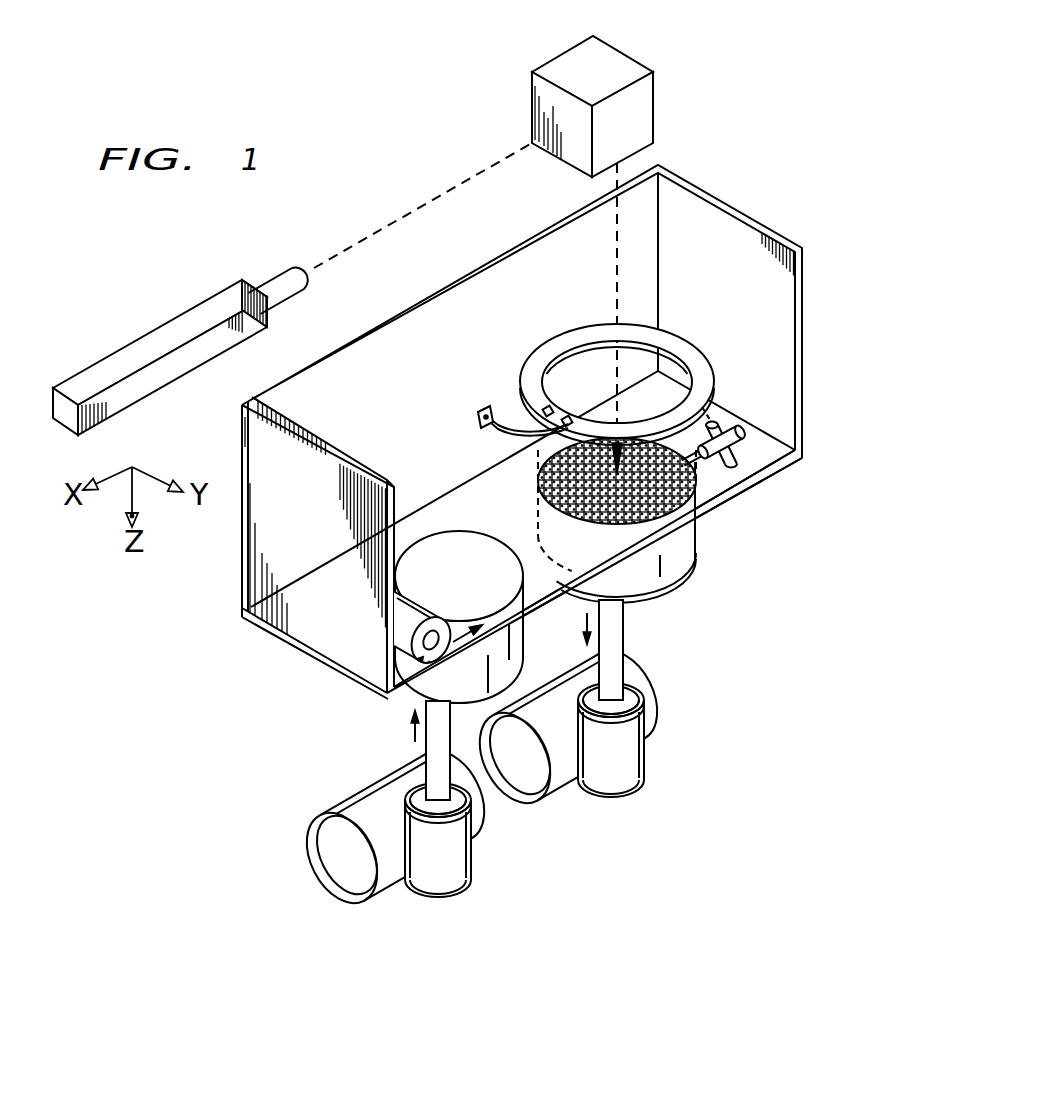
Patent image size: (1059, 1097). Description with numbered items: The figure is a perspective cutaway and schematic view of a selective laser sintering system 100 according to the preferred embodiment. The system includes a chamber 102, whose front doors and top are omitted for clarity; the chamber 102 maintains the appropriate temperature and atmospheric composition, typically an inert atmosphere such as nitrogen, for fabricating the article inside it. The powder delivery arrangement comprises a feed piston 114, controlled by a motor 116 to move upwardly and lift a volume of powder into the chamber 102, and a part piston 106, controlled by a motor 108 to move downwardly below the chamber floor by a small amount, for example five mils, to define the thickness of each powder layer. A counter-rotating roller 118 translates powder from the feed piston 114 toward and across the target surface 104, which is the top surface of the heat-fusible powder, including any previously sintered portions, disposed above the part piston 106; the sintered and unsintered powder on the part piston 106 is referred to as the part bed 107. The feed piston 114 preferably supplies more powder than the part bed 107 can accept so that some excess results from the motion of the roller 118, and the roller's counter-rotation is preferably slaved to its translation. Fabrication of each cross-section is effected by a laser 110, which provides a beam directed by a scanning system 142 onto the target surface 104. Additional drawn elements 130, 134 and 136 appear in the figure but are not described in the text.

The selective laser sintering system 100 is at (855, 388).
The chamber 102 is at (758, 227).
The target surface 104 is at (557, 467).
The part piston 106 is at (668, 582).
The part bed 107 is at (538, 532).
The motor 108 is at (648, 752).
The laser 110 is at (145, 343).
The feed piston 114 is at (415, 693).
The motor 116 is at (475, 850).
The roller 118 is at (423, 608).
The clamp ring 130 is at (540, 358).
The gas tube 134 is at (738, 443).
The pin 136 is at (716, 434).
The scanning system 142 is at (572, 63).